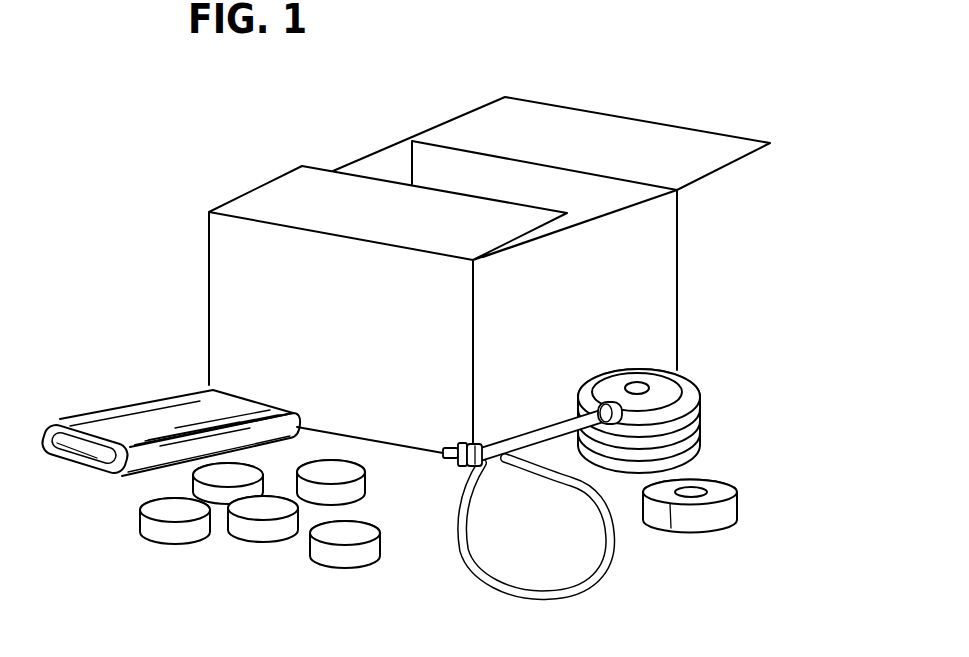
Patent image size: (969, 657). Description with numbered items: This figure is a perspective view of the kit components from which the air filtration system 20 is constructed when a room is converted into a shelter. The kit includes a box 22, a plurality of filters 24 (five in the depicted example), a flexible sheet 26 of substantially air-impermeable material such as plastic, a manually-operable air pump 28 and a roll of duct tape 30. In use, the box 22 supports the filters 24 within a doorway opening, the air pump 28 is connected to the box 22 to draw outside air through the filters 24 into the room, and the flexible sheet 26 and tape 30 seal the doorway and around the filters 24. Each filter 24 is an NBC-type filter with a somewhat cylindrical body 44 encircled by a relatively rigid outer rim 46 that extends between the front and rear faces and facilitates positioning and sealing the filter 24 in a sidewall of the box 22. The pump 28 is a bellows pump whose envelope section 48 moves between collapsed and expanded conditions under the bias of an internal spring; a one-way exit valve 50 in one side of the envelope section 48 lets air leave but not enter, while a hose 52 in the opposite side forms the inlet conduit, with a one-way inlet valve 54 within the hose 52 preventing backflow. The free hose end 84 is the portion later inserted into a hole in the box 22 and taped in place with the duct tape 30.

The system 20 is at (788, 271).
The box 22 is at (662, 268).
The filters 24 is at (165, 543).
The flexible sheet 26 is at (123, 405).
The air pump 28 is at (685, 403).
The duct tape 30 is at (730, 510).
The body 44 is at (150, 510).
The outer rim 46 is at (140, 525).
The envelope section 48 is at (702, 430).
The one-way exit valve 50 is at (632, 385).
The hose 52 is at (578, 585).
The one-way inlet valve 54 is at (587, 407).
The free hose end 84 is at (445, 453).